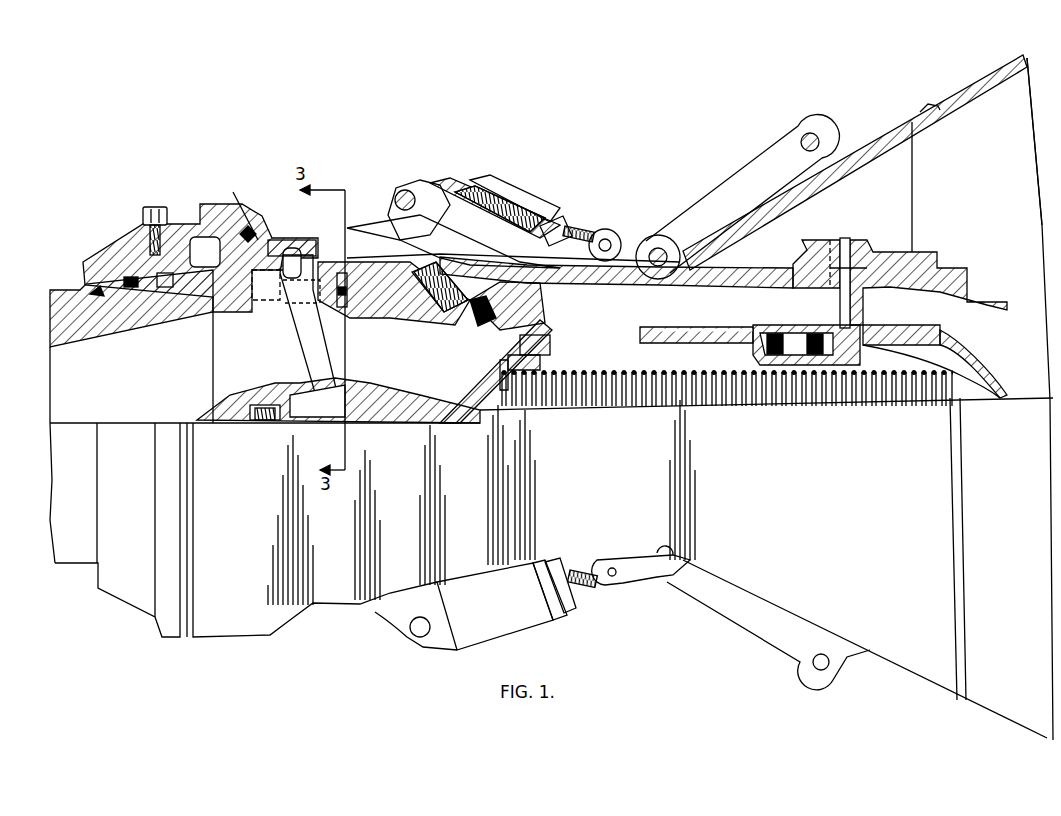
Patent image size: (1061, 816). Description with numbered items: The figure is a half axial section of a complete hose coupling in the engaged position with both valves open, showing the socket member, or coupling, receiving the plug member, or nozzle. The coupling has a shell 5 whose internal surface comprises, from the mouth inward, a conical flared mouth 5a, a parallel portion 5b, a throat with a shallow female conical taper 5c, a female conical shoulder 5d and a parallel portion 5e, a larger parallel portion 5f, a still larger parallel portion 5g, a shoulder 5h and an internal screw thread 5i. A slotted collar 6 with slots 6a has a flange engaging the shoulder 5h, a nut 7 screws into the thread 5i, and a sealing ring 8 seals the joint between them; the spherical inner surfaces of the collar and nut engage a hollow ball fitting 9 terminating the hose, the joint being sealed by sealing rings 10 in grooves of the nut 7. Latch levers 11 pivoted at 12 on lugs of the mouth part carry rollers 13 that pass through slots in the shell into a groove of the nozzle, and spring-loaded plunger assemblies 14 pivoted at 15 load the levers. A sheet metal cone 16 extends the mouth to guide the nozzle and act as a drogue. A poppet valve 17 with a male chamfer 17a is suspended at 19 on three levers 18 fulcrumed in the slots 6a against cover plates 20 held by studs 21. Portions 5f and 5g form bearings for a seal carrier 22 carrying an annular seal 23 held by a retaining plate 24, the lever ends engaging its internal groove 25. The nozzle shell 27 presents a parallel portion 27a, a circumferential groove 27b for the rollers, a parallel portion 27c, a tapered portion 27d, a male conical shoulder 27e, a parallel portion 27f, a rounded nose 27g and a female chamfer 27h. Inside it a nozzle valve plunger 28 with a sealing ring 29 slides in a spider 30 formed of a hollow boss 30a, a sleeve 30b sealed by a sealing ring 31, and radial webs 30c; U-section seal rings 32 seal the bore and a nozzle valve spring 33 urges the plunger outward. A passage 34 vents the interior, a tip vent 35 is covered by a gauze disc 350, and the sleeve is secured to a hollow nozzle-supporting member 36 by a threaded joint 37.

The shell 5 is at (349, 228).
The conical flared mouth 5a is at (840, 180).
The parallel portion 5b is at (612, 238).
The shallow female conical taper 5c is at (580, 230).
The female conical shoulder 5d is at (556, 230).
The parallel portion 5e is at (505, 195).
The parallel portion of larger diameter 5f is at (445, 210).
The parallel portion of still larger diameter 5g is at (300, 242).
The shoulder 5h is at (260, 233).
The internal screw thread 5i is at (192, 207).
The slotted collar 6 is at (205, 288).
The slots 6a is at (286, 296).
The nut 7 is at (118, 250).
The sealing ring 8 is at (236, 207).
The hollow ball fitting 9 is at (145, 306).
The sealing rings 10 is at (127, 282).
The latch levers 11 is at (625, 245).
The pivot 12 is at (812, 135).
The rollers 13 is at (657, 235).
The spring-loaded plunger assemblies 14 is at (530, 190).
The pivot 15 is at (402, 195).
The sheet metal cone 16 is at (968, 92).
The poppet valve 17 is at (382, 410).
The male chamfer 17a is at (540, 372).
The levers 18 is at (315, 368).
The pivot 19 is at (322, 405).
The cover plates 20 is at (318, 300).
The studs 21 is at (348, 283).
The seal carrier 22 is at (326, 262).
The annular seal 23 is at (450, 312).
The annular retaining plate 24 is at (480, 310).
The internal circumferential groove 25 is at (288, 255).
The nozzle shell 27 is at (722, 288).
The parallel portion 27a is at (745, 346).
The circumferential groove 27b is at (660, 285).
The parallel portion 27c is at (610, 284).
The tapered portion 27d is at (580, 283).
The male conical shoulder 27e is at (540, 283).
The parallel portion 27f is at (528, 292).
The rounded nose 27g is at (498, 368).
The female chamfer 27h is at (462, 410).
The nozzle valve plunger 28 is at (640, 400).
The sealing ring 29 is at (560, 375).
The spider 30 is at (790, 272).
The hollow boss 30a is at (745, 326).
The sleeve 30b is at (855, 244).
The radial webs 30c is at (967, 270).
The sealing ring 31 is at (826, 248).
The U-section seal rings 32 is at (780, 372).
The nozzle valve spring 33 is at (866, 372).
The passage 34 is at (852, 262).
The vent 35 is at (516, 395).
The gauze disc 350 is at (504, 395).
The hollow nozzle-supporting member 36 is at (995, 303).
The threaded joint 37 is at (930, 258).